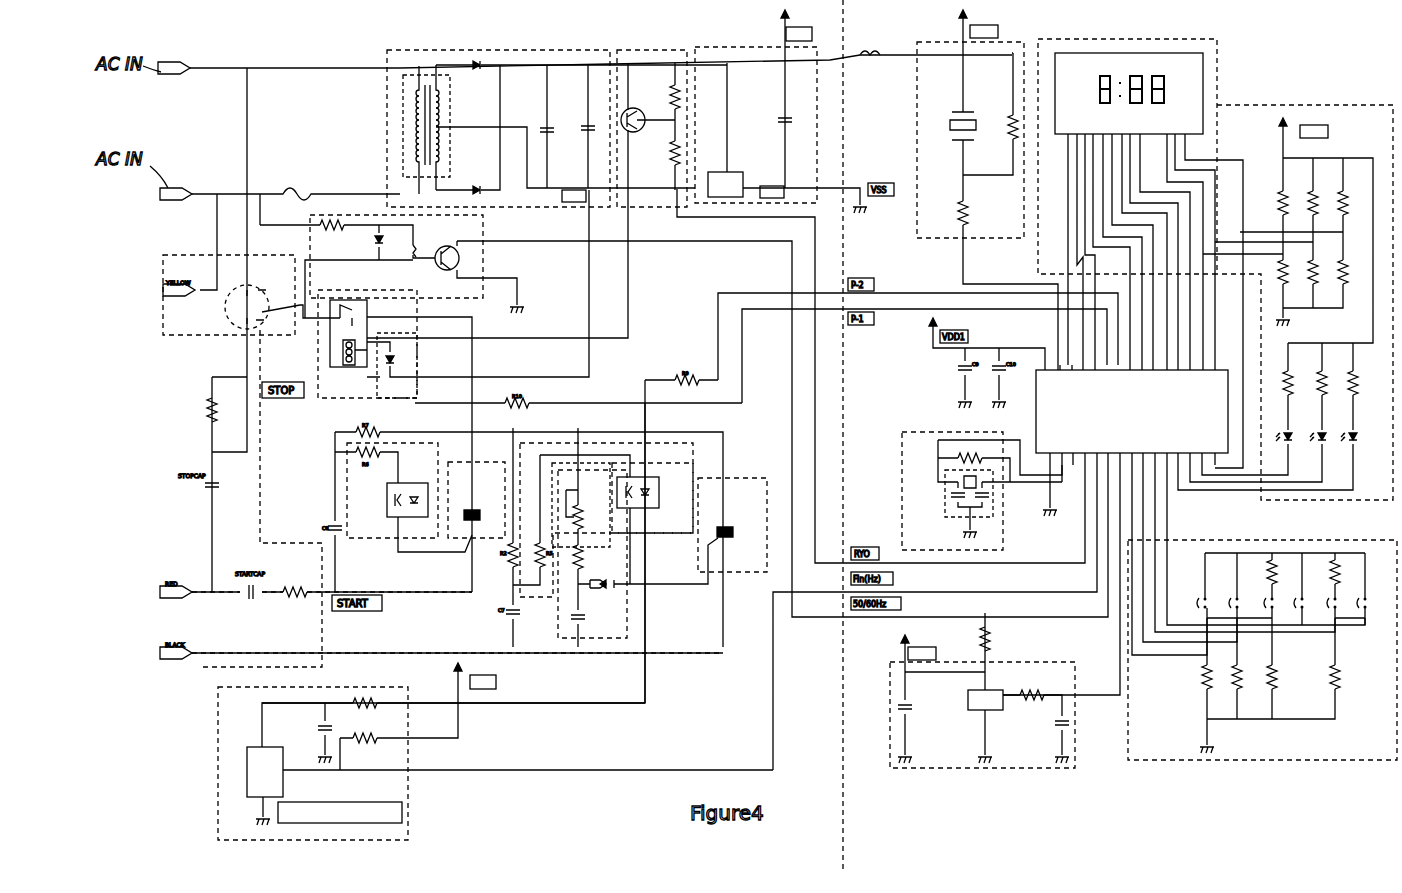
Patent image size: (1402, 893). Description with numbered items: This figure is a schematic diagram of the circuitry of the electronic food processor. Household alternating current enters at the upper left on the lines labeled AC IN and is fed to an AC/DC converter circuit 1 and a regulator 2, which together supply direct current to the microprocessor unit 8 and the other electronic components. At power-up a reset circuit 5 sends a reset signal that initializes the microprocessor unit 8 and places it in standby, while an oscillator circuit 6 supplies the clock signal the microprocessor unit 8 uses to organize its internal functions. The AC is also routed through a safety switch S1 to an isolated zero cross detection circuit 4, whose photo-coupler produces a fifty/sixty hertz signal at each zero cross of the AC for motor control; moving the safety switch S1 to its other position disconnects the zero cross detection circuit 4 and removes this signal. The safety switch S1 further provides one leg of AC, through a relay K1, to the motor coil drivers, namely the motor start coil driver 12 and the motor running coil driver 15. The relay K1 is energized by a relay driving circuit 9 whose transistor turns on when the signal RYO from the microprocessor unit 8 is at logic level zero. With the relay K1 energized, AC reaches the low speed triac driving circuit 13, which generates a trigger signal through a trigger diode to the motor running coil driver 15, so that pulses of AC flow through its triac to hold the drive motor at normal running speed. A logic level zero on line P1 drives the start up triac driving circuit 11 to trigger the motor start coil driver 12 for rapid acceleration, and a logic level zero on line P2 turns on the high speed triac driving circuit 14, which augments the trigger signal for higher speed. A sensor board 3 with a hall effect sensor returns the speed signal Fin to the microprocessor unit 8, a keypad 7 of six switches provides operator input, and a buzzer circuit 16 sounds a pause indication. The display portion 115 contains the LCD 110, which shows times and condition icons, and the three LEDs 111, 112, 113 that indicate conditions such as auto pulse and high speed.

The AC/DC converter circuit 1 is at (557, 128).
The regulator 2 is at (881, 286).
The sensor board 3 is at (495, 751).
The zero cross detection circuit 4 is at (392, 266).
The reset circuit 5 is at (982, 690).
The oscillator circuit 6 is at (982, 491).
The keypad 7 is at (1262, 650).
The microprocessor unit 8 is at (911, 505).
The relay driving circuit 9 is at (528, 194).
The start up triac driving circuit 11 is at (392, 490).
The motor start coil driver 12 is at (476, 500).
The low speed triac driving circuit 13 is at (589, 550).
The high speed triac driving circuit 14 is at (652, 490).
The motor running coil driver 15 is at (732, 525).
The buzzer circuit 16 is at (987, 190).
The LCD 110 is at (1205, 72).
The LED 111 is at (1247, 409).
The LED 112 is at (1258, 412).
The LED 113 is at (1268, 416).
The display portion 115 is at (1258, 120).
The safety switch S1 is at (225, 320).
The relay K1 is at (453, 391).